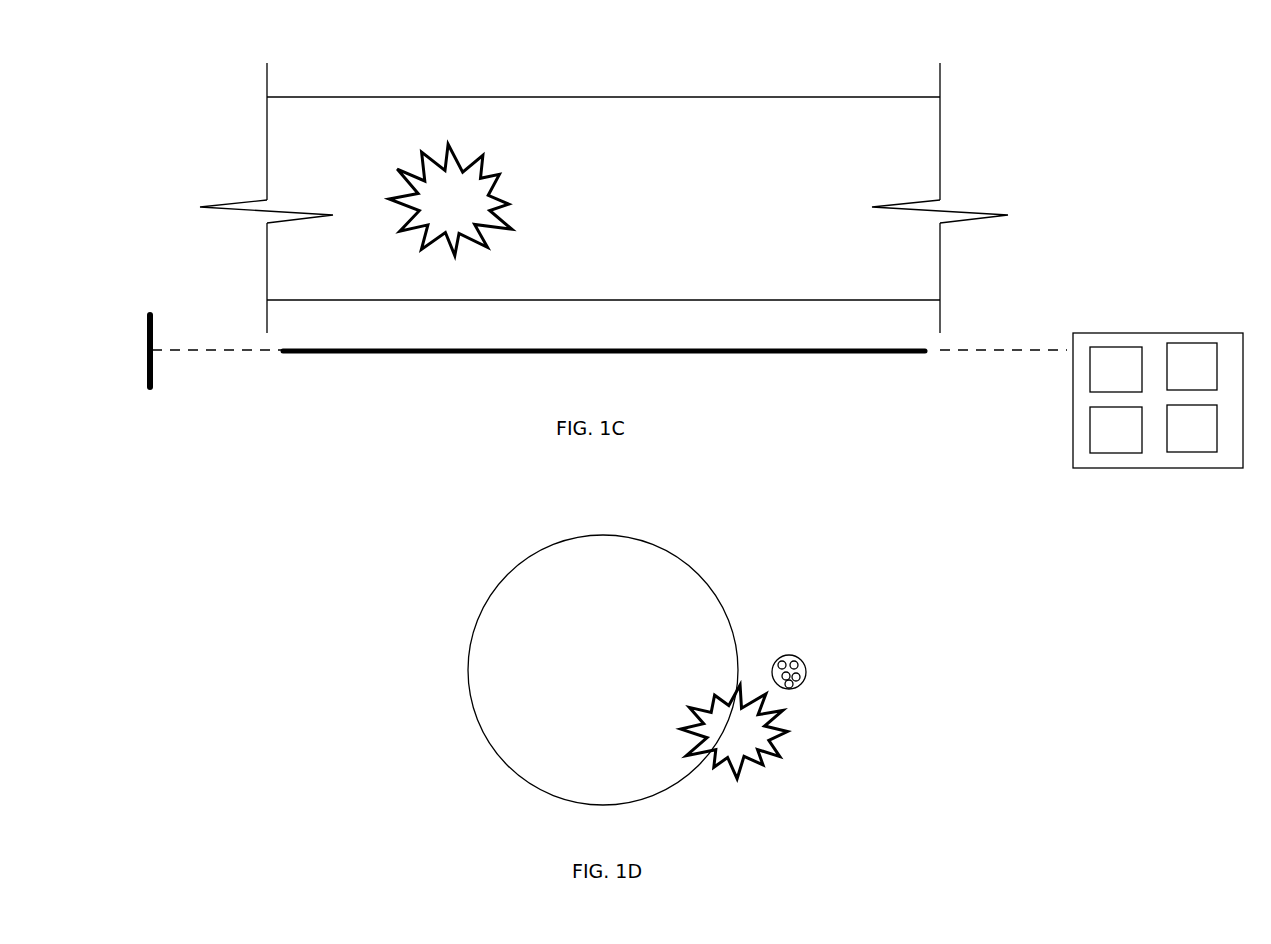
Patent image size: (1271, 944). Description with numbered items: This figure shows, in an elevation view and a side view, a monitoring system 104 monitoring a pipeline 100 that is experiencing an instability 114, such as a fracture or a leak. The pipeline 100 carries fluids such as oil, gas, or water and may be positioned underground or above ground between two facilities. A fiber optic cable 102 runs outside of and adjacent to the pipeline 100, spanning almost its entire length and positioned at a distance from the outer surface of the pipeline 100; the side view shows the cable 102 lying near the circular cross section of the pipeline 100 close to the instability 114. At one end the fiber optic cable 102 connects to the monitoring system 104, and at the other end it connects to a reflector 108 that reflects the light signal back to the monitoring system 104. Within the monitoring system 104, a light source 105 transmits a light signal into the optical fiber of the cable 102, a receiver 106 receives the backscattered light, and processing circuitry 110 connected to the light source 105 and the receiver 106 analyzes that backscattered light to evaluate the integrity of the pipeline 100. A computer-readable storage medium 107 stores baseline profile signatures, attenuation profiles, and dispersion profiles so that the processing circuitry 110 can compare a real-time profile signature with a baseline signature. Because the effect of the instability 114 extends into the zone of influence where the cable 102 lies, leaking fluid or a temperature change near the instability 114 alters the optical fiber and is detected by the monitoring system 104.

In FIG. 1C, the pipeline 100 is at (788, 97).
In FIG. 1D, the pipeline 100 is at (678, 560).
In FIG. 1C, the fiber optic cable 102 is at (788, 354).
In FIG. 1D, the fiber optic cable 102 is at (789, 655).
In FIG. 1C, the monitoring system 104 is at (1162, 468).
In FIG. 1C, the light source 105 is at (1176, 376).
In FIG. 1C, the receiver 106 is at (1100, 382).
In FIG. 1C, the computer-readable storage medium 107 is at (1176, 438).
In FIG. 1C, the reflector 108 is at (150, 368).
In FIG. 1C, the processing circuitry 110 is at (1100, 442).
In FIG. 1C, the instability 114 is at (436, 212).
In FIG. 1D, the instability 114 is at (722, 742).